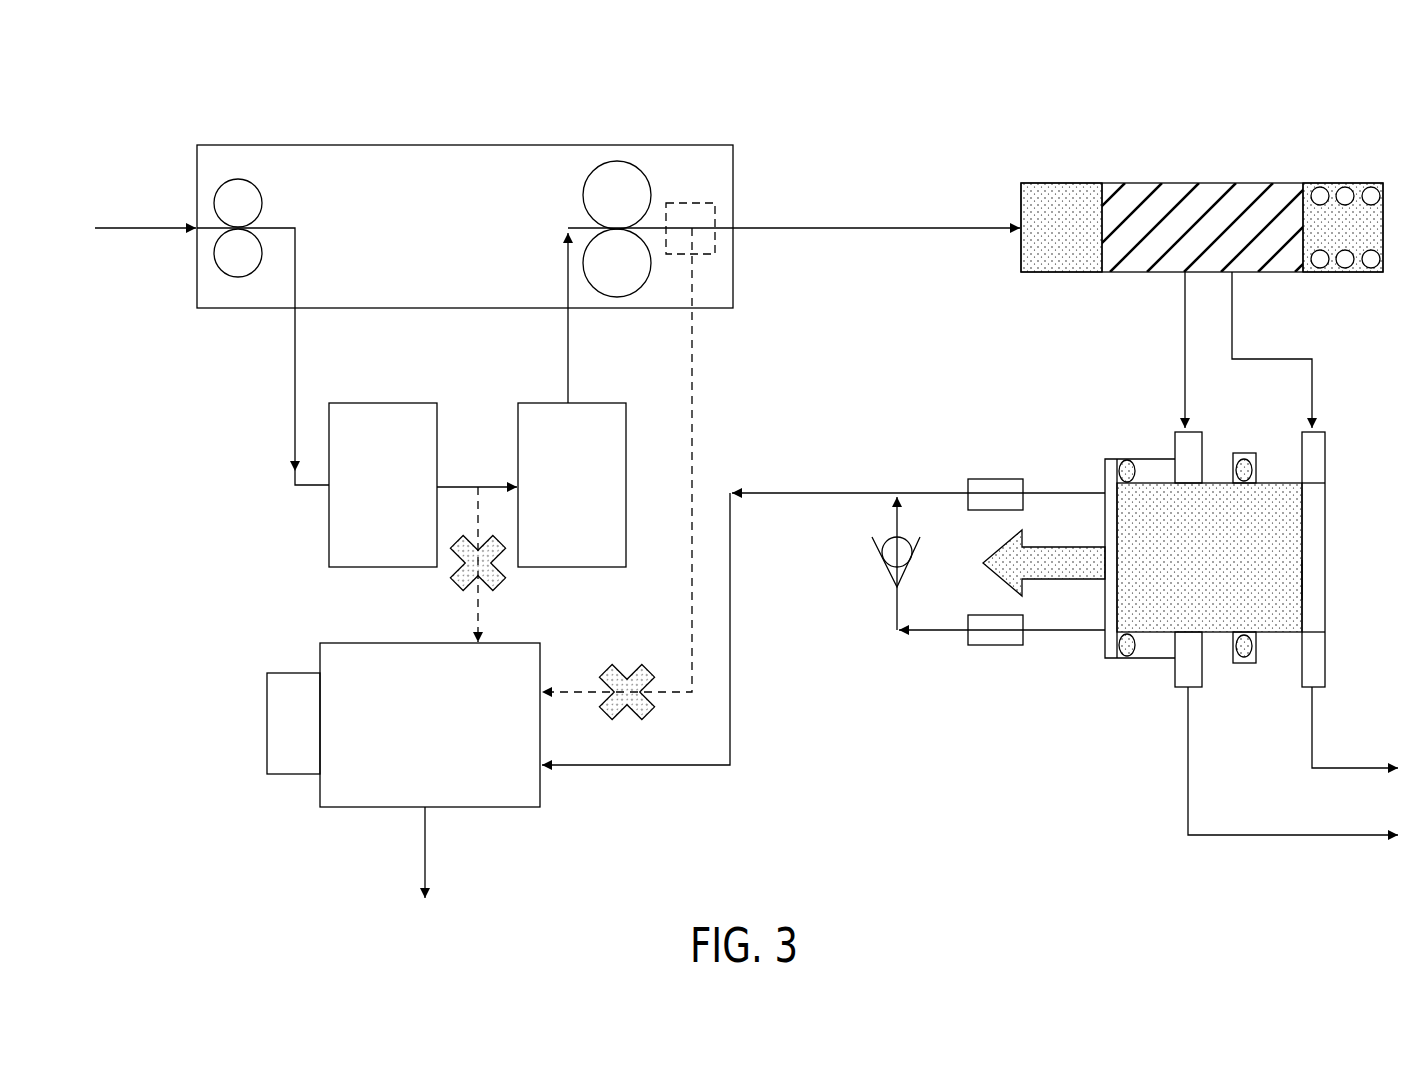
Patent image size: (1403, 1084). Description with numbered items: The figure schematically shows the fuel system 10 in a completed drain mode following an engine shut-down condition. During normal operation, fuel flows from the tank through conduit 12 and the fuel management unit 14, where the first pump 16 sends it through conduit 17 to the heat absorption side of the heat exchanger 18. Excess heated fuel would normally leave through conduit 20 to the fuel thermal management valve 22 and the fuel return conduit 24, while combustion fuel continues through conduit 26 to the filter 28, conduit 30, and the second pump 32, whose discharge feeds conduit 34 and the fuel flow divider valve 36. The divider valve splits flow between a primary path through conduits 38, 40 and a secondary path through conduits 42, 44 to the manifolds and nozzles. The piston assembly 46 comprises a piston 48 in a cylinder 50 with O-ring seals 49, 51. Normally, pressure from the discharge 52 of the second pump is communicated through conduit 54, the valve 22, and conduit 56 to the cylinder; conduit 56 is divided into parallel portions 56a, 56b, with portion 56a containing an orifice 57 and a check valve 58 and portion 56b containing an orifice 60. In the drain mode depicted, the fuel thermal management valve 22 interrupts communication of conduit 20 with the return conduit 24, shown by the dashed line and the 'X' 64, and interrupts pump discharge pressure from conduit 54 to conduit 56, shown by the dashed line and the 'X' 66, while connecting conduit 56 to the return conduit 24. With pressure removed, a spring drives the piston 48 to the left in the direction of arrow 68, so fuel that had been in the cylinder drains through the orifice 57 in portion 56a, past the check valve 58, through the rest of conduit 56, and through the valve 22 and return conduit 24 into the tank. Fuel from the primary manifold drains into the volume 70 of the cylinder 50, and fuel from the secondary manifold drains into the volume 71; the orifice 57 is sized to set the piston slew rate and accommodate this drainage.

The fuel system 10 is at (1280, 120).
The conduit 12 is at (125, 226).
The fuel management unit 14 is at (441, 144).
The first pump 16 is at (259, 191).
The conduit 17 is at (293, 356).
The heat exchanger 18 is at (390, 402).
The conduit 20 is at (486, 613).
The fuel thermal management valve 22 is at (356, 642).
The fuel return conduit 24 is at (428, 858).
The conduit 26 is at (487, 486).
The filter 28 is at (588, 402).
The conduit 30 is at (567, 348).
The second pump 32 is at (632, 162).
The conduit 34 is at (910, 227).
The fuel flow divider valve 36 is at (1079, 190).
The conduit 38 is at (1184, 345).
The conduit 40 is at (1187, 815).
The conduit 42 is at (1313, 388).
The conduit 44 is at (1313, 735).
The piston assembly 46 is at (1326, 499).
The piston 48 is at (1225, 587).
The O-ring seal 49 is at (1120, 465).
The cylinder 50 is at (1135, 460).
The O-ring seal 51 is at (1246, 462).
The discharge 52 is at (718, 210).
The conduit 54 is at (696, 405).
The conduit 56 is at (732, 655).
The conduit portion 56a is at (926, 631).
The conduit portion 56b is at (926, 492).
The orifice 57 is at (998, 646).
The check valve 58 is at (882, 558).
The orifice 60 is at (1003, 478).
The 'X' 64 is at (455, 590).
The 'X' 66 is at (614, 670).
The arrow 68 is at (988, 568).
The volume 70 is at (1150, 468).
The volume 71 is at (1310, 600).